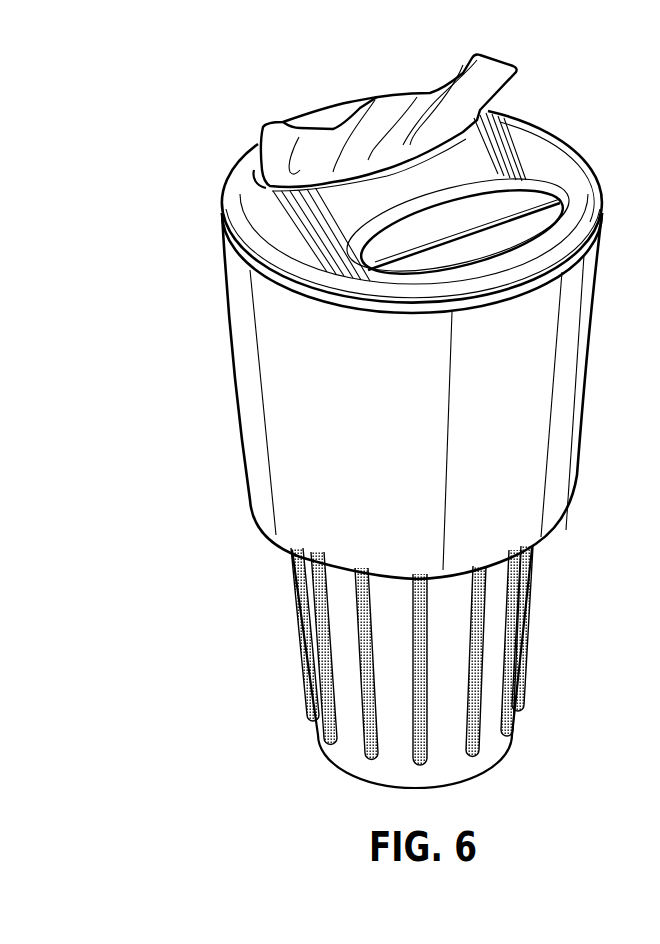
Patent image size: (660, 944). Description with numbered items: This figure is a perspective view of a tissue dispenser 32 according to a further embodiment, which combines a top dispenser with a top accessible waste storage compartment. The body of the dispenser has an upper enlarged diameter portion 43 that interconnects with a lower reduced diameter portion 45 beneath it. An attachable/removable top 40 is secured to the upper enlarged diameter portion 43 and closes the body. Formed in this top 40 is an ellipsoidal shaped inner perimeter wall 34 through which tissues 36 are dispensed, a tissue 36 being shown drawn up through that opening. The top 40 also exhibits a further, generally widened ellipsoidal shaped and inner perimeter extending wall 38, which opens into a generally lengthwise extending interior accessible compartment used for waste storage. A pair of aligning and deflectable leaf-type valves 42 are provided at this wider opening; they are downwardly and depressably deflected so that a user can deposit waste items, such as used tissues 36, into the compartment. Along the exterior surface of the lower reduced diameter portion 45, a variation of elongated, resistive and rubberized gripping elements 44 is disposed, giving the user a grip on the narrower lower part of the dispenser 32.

The tissue dispenser 32 is at (386, 414).
The ellipsoidal shaped inner perimeter wall 34 is at (270, 190).
The tissues 36 is at (463, 73).
The widened ellipsoidal shaped inner perimeter extending wall 38 is at (536, 185).
The attachable/removable top 40 is at (527, 135).
The leaf-type valves 42 is at (478, 218).
The upper enlarged diameter portion 43 is at (253, 437).
The gripping elements 44 is at (323, 660).
The lower reduced diameter portion 45 is at (350, 720).